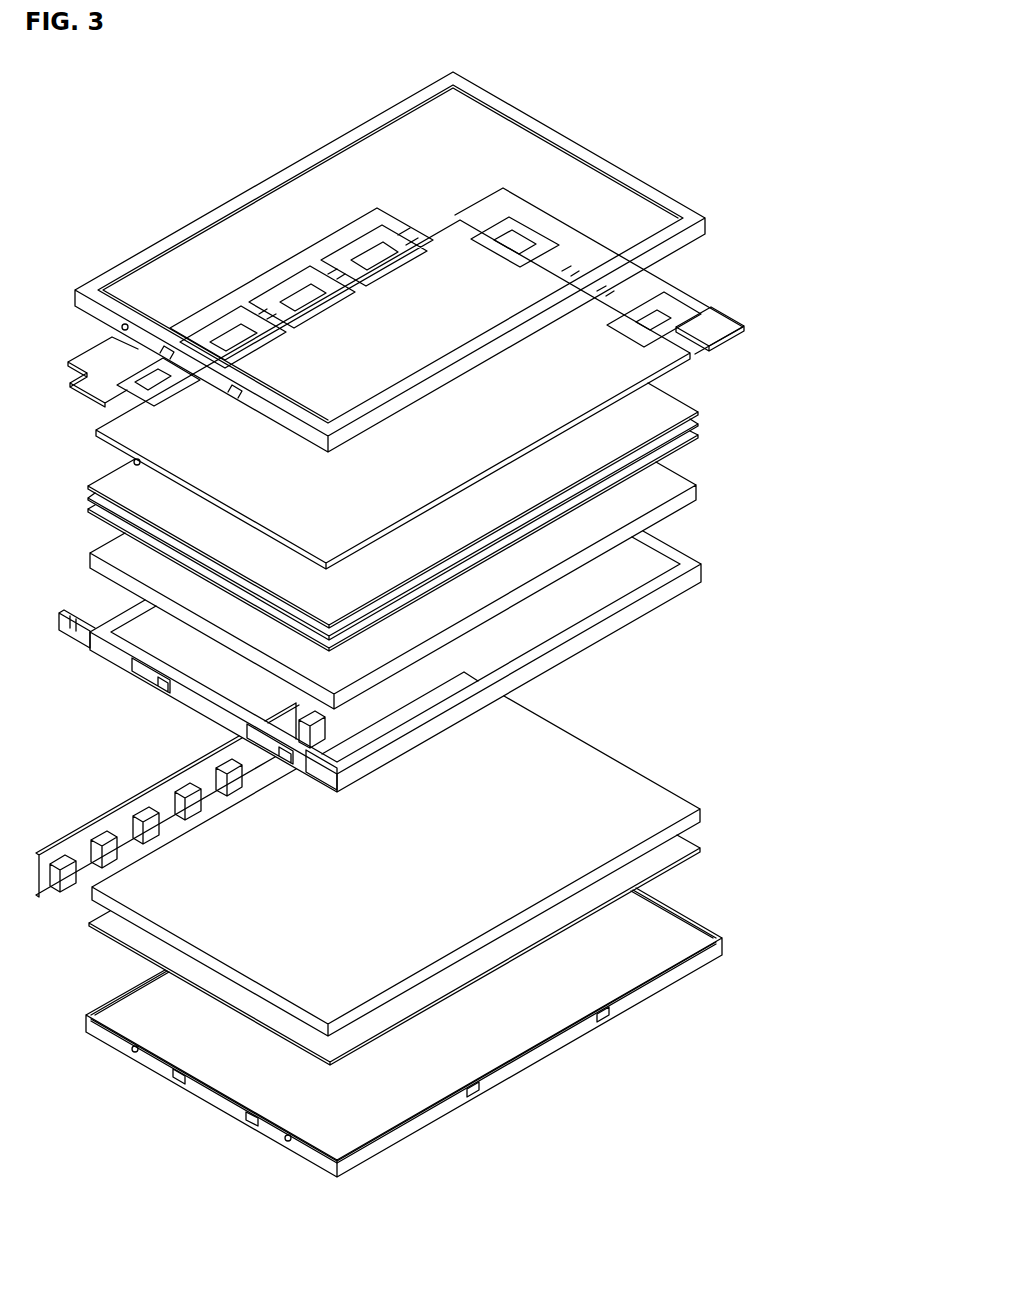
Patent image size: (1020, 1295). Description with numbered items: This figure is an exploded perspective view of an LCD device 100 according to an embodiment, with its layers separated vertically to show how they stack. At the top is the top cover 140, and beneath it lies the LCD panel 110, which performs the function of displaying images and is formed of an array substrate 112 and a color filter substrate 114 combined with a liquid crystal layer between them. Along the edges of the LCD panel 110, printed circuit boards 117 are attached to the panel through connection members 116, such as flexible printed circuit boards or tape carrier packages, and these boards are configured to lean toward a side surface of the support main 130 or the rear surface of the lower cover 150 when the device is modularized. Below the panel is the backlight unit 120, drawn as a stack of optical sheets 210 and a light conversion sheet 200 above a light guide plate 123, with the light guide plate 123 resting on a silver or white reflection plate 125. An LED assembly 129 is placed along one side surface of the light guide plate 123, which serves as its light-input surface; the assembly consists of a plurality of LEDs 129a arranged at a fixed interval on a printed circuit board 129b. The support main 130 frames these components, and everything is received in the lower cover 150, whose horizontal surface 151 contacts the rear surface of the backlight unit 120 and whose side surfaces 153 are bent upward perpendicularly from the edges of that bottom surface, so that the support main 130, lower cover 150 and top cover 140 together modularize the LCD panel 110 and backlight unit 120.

The LCD device 100 is at (134, 105).
The LCD panel 110 is at (426, 362).
The array substrate 112 is at (680, 352).
The color filter substrate 114 is at (632, 347).
The connection member 116 is at (490, 238).
The printed circuit board 117 is at (340, 242).
The backlight unit 120 is at (442, 724).
The light guide plate 123 is at (686, 808).
The reflection plate 125 is at (438, 940).
The LED assembly 129 is at (412, 776).
The LEDs 129a is at (320, 725).
The printed circuit board (PCB) 129b is at (207, 787).
The support main 130 is at (697, 574).
The top cover 140 is at (611, 166).
The lower cover 150 is at (438, 1032).
The horizontal surface 151 is at (615, 978).
The side surfaces 153 is at (615, 1013).
The light conversion sheet 200 is at (695, 515).
The optical sheets 210 is at (706, 405).